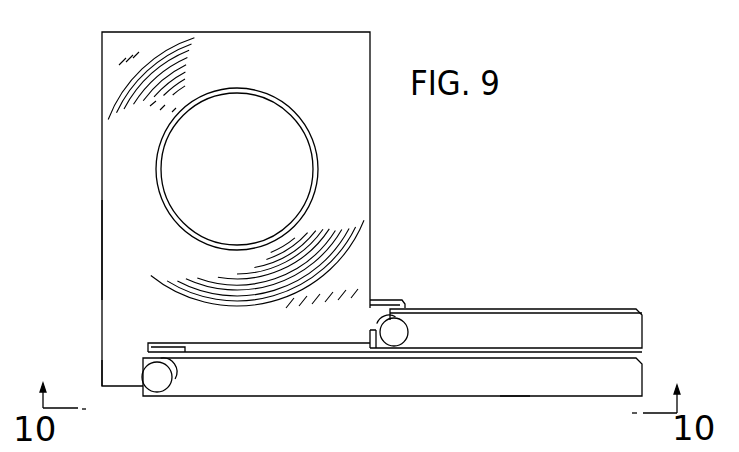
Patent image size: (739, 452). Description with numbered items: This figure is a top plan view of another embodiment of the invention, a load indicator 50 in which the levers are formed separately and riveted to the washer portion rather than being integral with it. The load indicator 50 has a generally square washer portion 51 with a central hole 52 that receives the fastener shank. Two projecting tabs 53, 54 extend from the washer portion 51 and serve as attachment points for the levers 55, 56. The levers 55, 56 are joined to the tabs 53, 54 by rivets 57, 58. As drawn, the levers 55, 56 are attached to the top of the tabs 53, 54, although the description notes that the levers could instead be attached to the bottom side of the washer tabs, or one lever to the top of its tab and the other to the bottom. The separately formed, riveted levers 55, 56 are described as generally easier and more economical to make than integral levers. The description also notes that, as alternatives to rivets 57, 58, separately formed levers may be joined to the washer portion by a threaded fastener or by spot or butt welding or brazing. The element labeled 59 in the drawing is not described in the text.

The load indicator 50 is at (103, 110).
The washer portion 51 is at (113, 256).
The central hole 52 is at (182, 200).
The projecting tab 53 is at (375, 314).
The projecting tab 54 is at (120, 365).
The lever 55 is at (514, 324).
The lever 56 is at (455, 383).
The rivet 57 is at (397, 332).
The rivet 58 is at (158, 385).
The rail base 59 is at (517, 424).